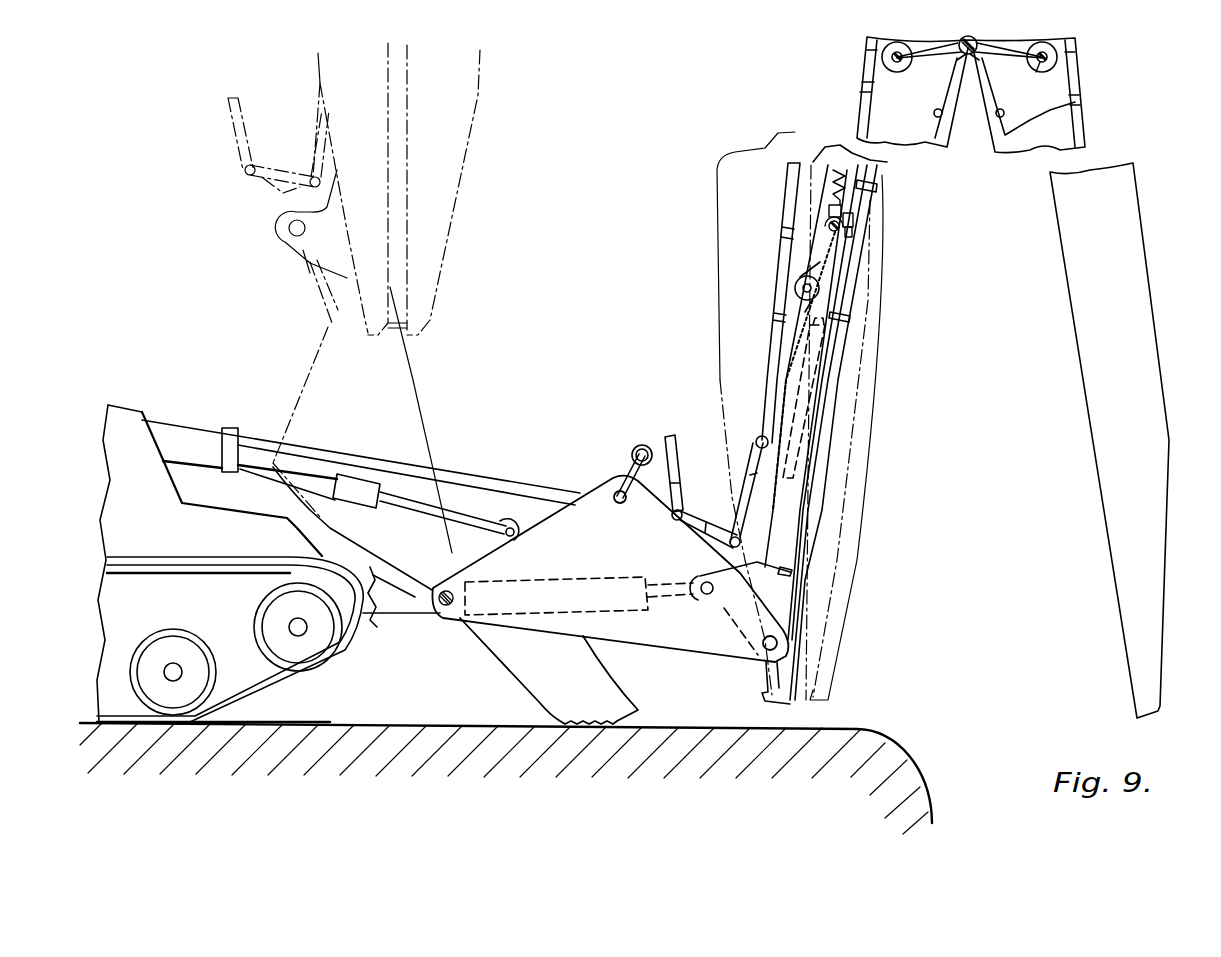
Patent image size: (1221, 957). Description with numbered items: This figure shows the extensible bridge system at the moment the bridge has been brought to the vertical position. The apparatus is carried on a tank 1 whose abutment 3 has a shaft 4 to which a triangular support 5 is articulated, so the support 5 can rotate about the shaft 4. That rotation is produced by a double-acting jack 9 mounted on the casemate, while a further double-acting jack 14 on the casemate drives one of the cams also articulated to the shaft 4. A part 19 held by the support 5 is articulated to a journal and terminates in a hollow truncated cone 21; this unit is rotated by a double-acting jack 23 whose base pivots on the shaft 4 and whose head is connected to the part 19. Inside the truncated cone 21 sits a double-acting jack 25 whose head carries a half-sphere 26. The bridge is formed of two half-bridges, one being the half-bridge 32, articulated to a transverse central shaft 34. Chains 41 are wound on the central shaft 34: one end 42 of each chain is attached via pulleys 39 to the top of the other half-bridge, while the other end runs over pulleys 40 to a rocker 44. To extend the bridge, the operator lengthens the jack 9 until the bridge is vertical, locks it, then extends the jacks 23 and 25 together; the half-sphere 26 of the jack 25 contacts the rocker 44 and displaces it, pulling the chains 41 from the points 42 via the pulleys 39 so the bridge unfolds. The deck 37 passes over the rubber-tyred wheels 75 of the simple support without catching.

The tank 1 is at (260, 673).
The abutment 3 is at (387, 612).
The shaft 4 is at (442, 613).
The triangular support 5 is at (583, 517).
The double-acting jack 9 is at (188, 438).
The double-acting jack 14 is at (339, 482).
The part 19 is at (773, 597).
The hollow truncated cone 21 is at (783, 510).
The double-acting jack 23 is at (606, 577).
The double-acting jack 25 is at (808, 357).
The half-sphere 26 is at (853, 227).
The half-bridge 32 is at (770, 325).
The transverse central shaft 34 is at (970, 58).
The deck 37 is at (711, 505).
The pulleys 39 is at (1038, 65).
The pulleys 40 is at (795, 289).
The chains 41 is at (862, 70).
The chain end 42 is at (901, 63).
The rocker 44 is at (828, 218).
The rubber tyred wheels 75 is at (642, 440).